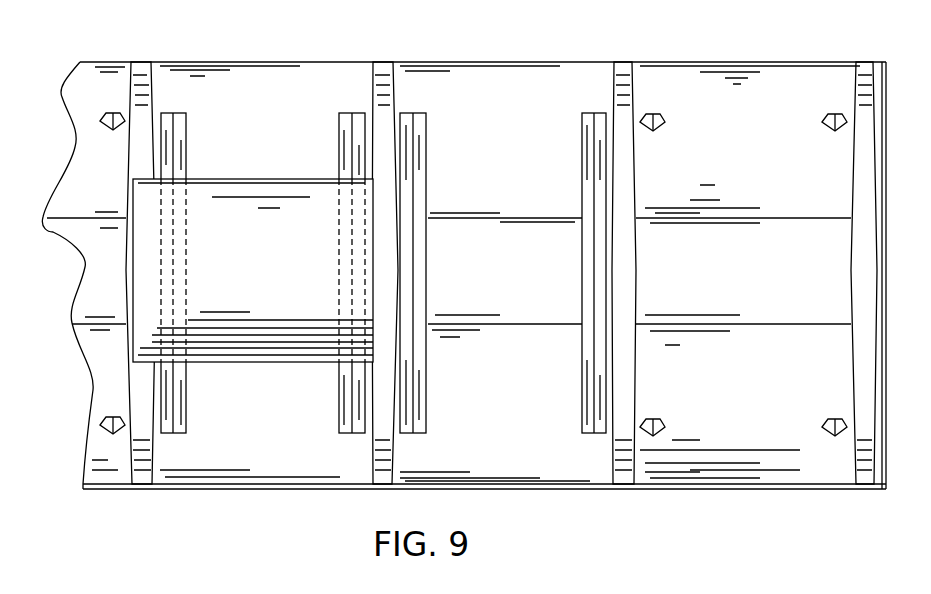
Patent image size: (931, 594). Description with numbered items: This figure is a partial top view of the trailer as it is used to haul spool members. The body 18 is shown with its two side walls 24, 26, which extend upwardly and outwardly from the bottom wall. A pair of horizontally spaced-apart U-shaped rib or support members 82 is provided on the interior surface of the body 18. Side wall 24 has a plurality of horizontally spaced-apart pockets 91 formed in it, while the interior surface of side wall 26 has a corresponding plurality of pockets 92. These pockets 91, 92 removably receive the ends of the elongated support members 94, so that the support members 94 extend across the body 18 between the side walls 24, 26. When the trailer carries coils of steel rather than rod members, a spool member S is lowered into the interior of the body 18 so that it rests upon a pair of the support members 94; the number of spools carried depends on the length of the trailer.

The body 18 is at (567, 515).
The side wall 24 is at (762, 433).
The side wall 26 is at (764, 158).
The U-shaped rib or support member 82 is at (637, 179).
The pocket 91 is at (102, 426).
The pocket 92 is at (104, 119).
The elongated support member 94 is at (420, 193).
The spool member S is at (252, 188).